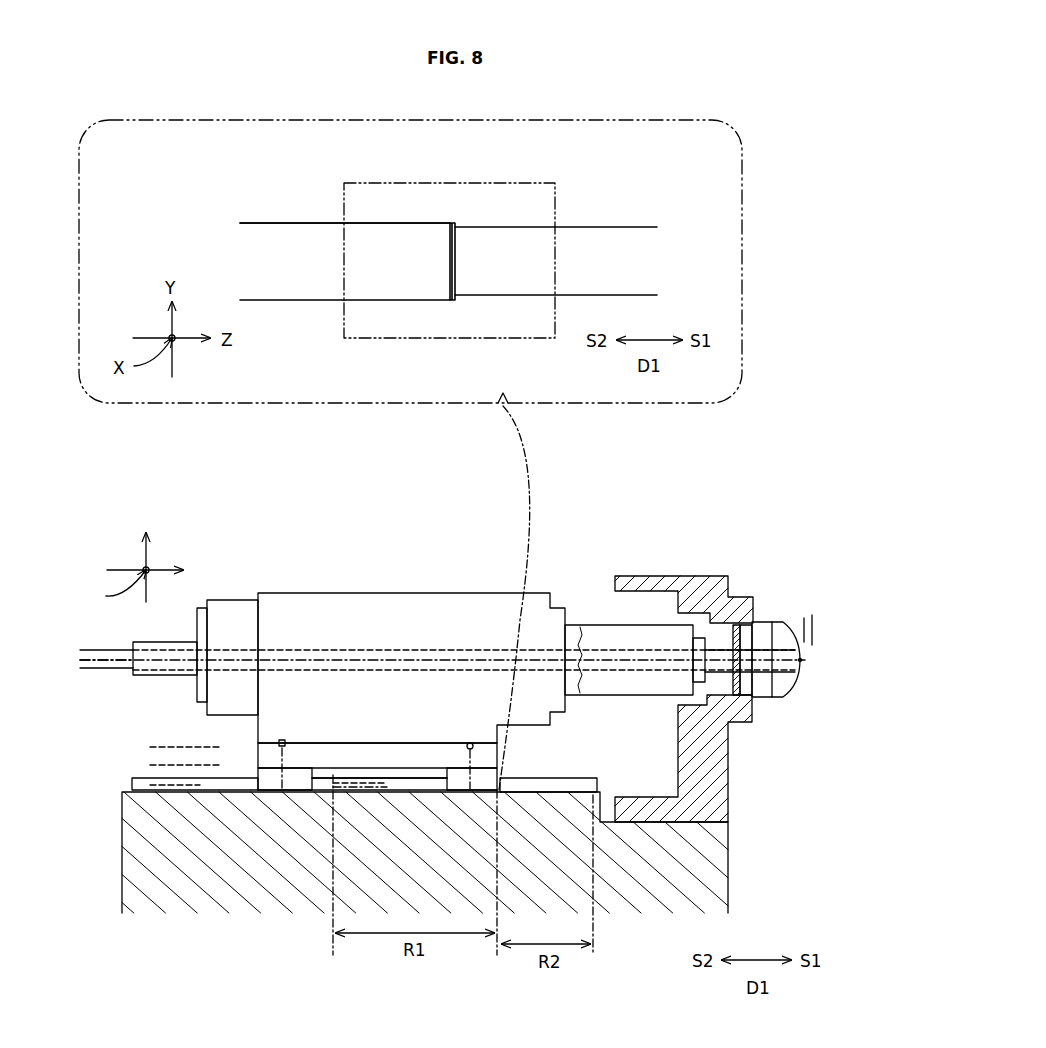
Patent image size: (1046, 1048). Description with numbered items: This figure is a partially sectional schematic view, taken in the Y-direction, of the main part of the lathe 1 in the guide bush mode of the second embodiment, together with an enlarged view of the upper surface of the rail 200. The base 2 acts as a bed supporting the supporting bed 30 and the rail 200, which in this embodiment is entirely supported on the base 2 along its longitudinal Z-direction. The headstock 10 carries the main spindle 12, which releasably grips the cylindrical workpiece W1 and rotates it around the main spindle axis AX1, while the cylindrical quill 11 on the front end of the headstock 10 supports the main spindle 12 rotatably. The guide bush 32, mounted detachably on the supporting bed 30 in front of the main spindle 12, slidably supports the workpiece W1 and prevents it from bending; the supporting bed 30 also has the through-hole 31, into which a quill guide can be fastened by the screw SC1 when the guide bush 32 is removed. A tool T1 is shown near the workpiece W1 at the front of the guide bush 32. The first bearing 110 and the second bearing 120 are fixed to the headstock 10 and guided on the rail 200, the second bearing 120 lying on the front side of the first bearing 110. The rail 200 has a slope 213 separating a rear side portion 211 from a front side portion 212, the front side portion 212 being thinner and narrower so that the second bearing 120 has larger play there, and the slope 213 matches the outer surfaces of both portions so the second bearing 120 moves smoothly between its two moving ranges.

The lathe 1 is at (245, 540).
The base 2 is at (729, 850).
The headstock 10 is at (355, 618).
The quill 11 is at (629, 640).
The main spindle 12 is at (708, 675).
The supporting bed 30 is at (729, 782).
The through-hole 31 is at (724, 632).
The guide bush 32 is at (779, 625).
The first bearing 110 is at (145, 715).
The second bearing 120 is at (497, 173).
The rail 200 is at (306, 159).
The rear side portion 211 is at (254, 223).
The front side portion 212 is at (632, 227).
The slope 213 is at (460, 300).
The screw SC1 is at (285, 743).
The main spindle axis AX1 is at (103, 673).
The tool T1 is at (808, 651).
The workpiece W1 is at (804, 664).